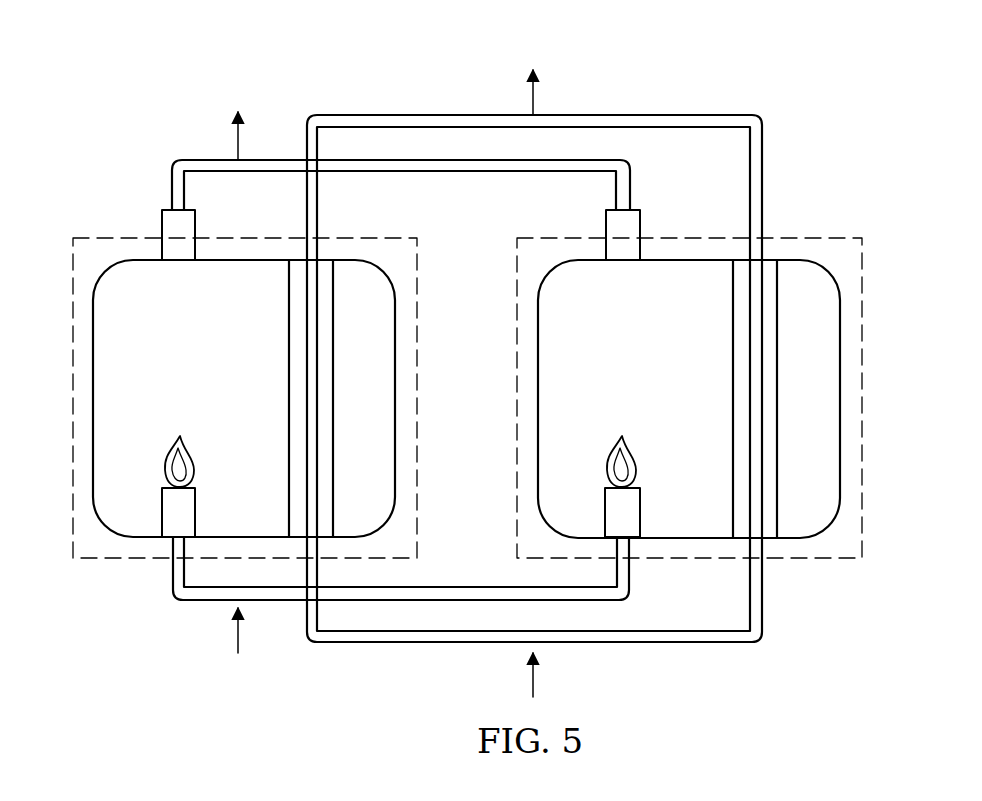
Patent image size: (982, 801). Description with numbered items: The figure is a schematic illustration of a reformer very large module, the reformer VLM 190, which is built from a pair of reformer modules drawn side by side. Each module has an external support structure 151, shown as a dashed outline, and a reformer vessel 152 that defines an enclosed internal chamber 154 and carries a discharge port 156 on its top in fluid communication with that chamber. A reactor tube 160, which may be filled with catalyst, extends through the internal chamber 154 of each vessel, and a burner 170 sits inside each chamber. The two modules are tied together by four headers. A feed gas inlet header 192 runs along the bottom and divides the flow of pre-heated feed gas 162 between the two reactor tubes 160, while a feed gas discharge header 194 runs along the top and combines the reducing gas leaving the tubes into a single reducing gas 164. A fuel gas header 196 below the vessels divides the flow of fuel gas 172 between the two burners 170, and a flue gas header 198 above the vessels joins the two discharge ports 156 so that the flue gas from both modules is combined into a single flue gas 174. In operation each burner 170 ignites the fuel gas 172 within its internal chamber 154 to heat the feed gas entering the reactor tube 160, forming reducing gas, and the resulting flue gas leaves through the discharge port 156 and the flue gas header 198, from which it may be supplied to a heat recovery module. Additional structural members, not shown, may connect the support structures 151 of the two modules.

The reformer VLM 190 is at (106, 80).
The external support structure 151 is at (510, 369).
The reformer vessel 152 is at (93, 433).
The internal chamber 154 is at (373, 322).
The discharge port 156 is at (162, 226).
The reactor tube 160 is at (289, 400).
The pre-heated feed gas 162 is at (535, 680).
The reducing gas 164 is at (535, 100).
The burner 170 is at (196, 513).
The fuel gas 172 is at (237, 640).
The flue gas 174 is at (237, 143).
The feed gas inlet header 192 is at (683, 642).
The feed gas discharge header 194 is at (688, 115).
The fuel gas header 196 is at (172, 575).
The flue gas header 198 is at (172, 183).